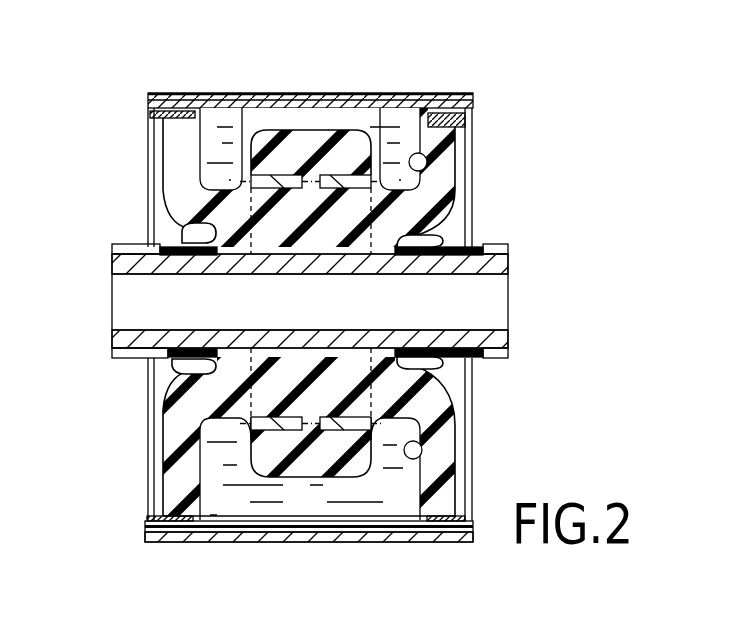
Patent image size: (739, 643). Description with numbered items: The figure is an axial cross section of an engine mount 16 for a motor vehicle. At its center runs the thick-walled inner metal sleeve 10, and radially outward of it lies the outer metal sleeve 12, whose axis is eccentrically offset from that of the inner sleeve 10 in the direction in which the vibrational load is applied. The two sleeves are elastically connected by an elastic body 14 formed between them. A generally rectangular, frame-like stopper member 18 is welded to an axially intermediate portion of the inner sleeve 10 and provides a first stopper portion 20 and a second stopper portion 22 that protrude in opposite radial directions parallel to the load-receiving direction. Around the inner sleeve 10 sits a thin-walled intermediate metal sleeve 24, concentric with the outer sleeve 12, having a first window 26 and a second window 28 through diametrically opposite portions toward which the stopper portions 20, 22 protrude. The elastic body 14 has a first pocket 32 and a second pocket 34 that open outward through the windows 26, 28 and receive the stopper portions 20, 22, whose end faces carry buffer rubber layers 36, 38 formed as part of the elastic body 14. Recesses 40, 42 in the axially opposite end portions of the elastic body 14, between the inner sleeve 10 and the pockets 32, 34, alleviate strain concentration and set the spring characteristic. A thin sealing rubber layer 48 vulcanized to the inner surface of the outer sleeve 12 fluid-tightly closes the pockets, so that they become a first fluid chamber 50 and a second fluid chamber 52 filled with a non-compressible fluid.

The inner metal sleeve 10 is at (484, 250).
The outer metal sleeve 12 is at (227, 535).
The elastic body 14 is at (478, 408).
The engine mount 16 is at (194, 58).
The stopper member 18 is at (351, 165).
The first stopper portion 20 is at (284, 177).
The second stopper portion 22 is at (333, 430).
The intermediate metal sleeve 24 is at (466, 96).
The first window 26 is at (231, 108).
The second window 28 is at (409, 533).
The first pocket 32 is at (424, 162).
The second pocket 34 is at (415, 462).
The buffer rubber layer 36 is at (323, 128).
The buffer rubber layer 38 is at (309, 478).
The recess 40 is at (190, 236).
The recess 42 is at (175, 366).
The sealing rubber layer 48 is at (180, 530).
The first fluid chamber 50 is at (408, 127).
The second fluid chamber 52 is at (250, 530).